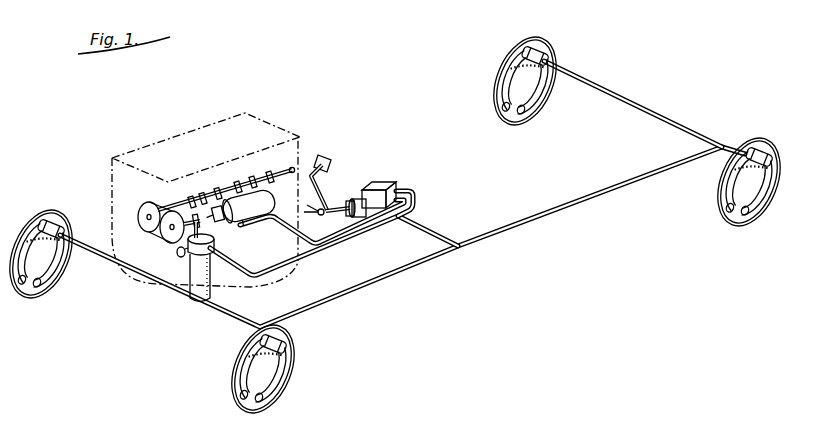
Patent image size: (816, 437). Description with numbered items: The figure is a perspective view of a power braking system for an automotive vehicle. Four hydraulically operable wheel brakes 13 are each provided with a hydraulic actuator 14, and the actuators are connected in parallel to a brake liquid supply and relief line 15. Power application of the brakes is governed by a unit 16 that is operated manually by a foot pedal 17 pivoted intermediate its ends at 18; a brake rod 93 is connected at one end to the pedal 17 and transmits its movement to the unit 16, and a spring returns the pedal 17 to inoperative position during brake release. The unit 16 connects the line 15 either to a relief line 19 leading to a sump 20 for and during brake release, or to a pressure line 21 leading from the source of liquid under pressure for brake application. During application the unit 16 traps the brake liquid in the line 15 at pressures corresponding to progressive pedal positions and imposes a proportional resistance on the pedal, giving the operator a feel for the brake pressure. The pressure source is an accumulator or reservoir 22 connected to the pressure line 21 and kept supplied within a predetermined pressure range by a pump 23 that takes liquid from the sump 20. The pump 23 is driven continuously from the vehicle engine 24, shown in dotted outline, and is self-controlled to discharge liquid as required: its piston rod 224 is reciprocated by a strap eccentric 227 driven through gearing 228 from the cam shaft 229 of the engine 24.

The wheel brakes 13 is at (47, 292).
The hydraulic actuators 14 is at (46, 225).
The brake liquid supply and relief line 15 is at (387, 279).
The unit 16 is at (386, 181).
The foot pedal 17 is at (330, 158).
The pivot 18 is at (323, 208).
The relief line 19 is at (347, 239).
The sump 20 is at (216, 290).
The pressure line 21 is at (279, 226).
The accumulator or reservoir 22 is at (264, 180).
The pump 23 is at (225, 252).
The vehicle engine 24 is at (178, 136).
The brake rod 93 is at (338, 206).
The piston rod 224 is at (168, 243).
The strap eccentric 227 is at (213, 189).
The gearing 228 is at (162, 204).
The cam shaft 229 is at (285, 163).